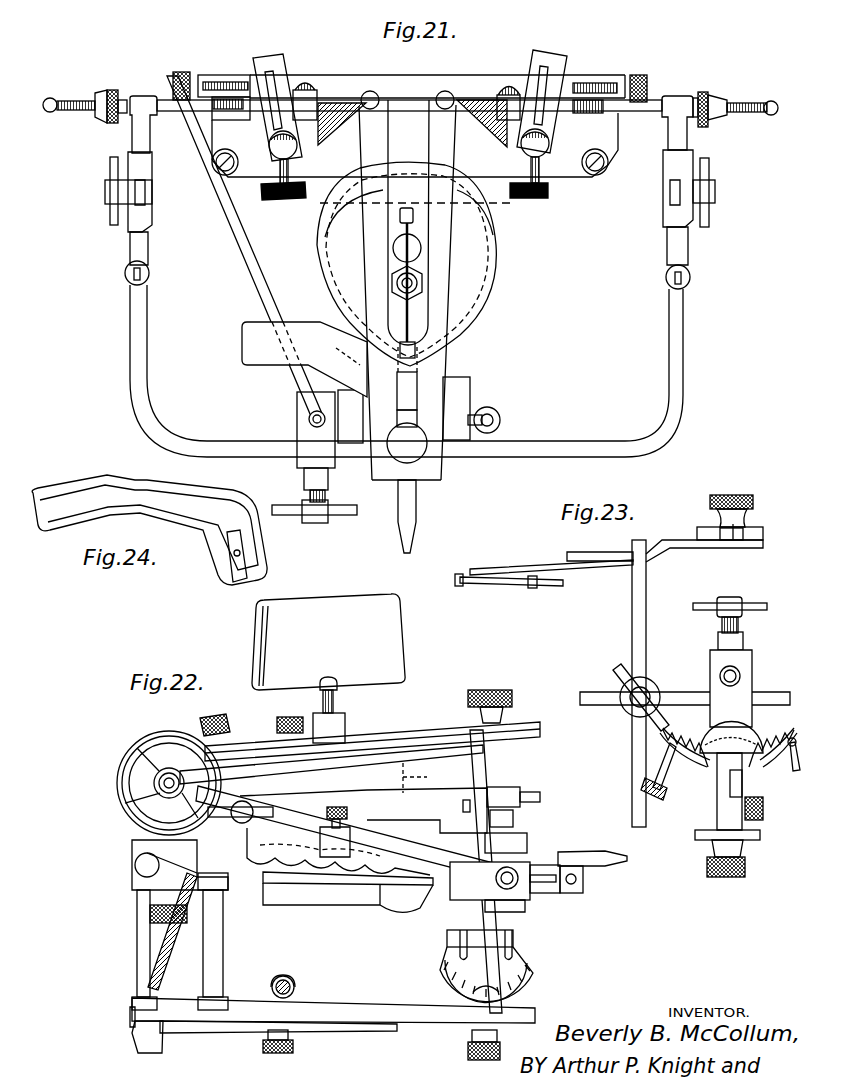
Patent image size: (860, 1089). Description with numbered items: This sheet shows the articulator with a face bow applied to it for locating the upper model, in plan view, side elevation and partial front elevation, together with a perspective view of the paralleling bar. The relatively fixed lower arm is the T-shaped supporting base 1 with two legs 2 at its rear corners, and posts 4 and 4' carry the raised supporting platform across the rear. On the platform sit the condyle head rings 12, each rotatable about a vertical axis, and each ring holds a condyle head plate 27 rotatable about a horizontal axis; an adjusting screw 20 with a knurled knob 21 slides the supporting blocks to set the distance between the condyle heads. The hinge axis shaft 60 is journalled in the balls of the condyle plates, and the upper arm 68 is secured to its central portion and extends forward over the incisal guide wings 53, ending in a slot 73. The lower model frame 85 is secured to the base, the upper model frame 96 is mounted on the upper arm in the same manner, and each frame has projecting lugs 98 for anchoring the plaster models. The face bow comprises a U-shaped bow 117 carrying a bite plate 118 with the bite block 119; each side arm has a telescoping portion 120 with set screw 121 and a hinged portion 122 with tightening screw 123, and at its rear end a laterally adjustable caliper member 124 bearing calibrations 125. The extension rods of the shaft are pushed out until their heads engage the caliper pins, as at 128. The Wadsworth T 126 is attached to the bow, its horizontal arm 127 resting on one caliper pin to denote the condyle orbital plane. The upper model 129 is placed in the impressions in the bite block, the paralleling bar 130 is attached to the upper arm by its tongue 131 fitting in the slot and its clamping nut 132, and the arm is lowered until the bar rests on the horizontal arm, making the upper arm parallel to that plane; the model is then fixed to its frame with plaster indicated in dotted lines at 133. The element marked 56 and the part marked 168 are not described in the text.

In FIG. 23, the supporting base 1 is at (705, 835).
In FIG. 22, the supporting base 1 is at (433, 1020).
In FIG. 22, the legs 2 is at (143, 1040).
In FIG. 22, the post 4 is at (197, 941).
In FIG. 22, the post 4' is at (140, 950).
In FIG. 21, the condyle head ring 12 is at (547, 66).
In FIG. 22, the condyle head ring 12 is at (118, 771).
In FIG. 21, the adjusting screw 20 is at (595, 83).
In FIG. 21, the knurled knob 21 is at (650, 86).
In FIG. 22, the condyle head plate 27 is at (140, 790).
In FIG. 23, the guide wings 53 is at (700, 743).
In FIG. 22, the guide wings 53 is at (443, 941).
In FIG. 23, the dome head 56 is at (745, 745).
In FIG. 21, the hinge axis shaft 60 is at (328, 103).
In FIG. 21, the upper arm 68 is at (440, 364).
In FIG. 22, the upper arm 68 is at (412, 742).
In FIG. 23, the slot 73 is at (560, 520).
In FIG. 22, the lower model frame 85 is at (323, 1002).
In FIG. 21, the upper model frame 96 is at (483, 291).
In FIG. 22, the projecting lugs 98 is at (281, 979).
In FIG. 21, the U-shaped bow 117 is at (550, 443).
In FIG. 23, the U-shaped bow 117 is at (603, 696).
In FIG. 22, the U-shaped bow 117 is at (420, 857).
In FIG. 21, the bite plate 118 is at (467, 330).
In FIG. 22, the bite plate 118 is at (430, 890).
In FIG. 21, the bite block 119 is at (498, 204).
In FIG. 22, the bite block 119 is at (357, 888).
In FIG. 21, the telescoping portion 120 is at (137, 248).
In FIG. 22, the telescoping portion 120 is at (300, 830).
In FIG. 21, the set screw 121 is at (149, 272).
In FIG. 22, the set screw 121 is at (407, 813).
In FIG. 21, the hinged portion 122 is at (140, 153).
In FIG. 22, the hinged portion 122 is at (133, 822).
In FIG. 21, the tightening screw 123 is at (115, 194).
In FIG. 22, the tightening screw 123 is at (243, 823).
In FIG. 21, the caliper member 124 is at (93, 113).
In FIG. 23, the caliper member 124 is at (487, 584).
In FIG. 22, the caliper member 124 is at (170, 775).
In FIG. 21, the calibrations 125 is at (70, 112).
In FIG. 21, the Wadsworth T 126 is at (308, 420).
In FIG. 23, the Wadsworth T 126 is at (639, 578).
In FIG. 22, the Wadsworth T 126 is at (480, 783).
In FIG. 21, the horizontal arm 127 is at (248, 270).
In FIG. 23, the horizontal arm 127 is at (507, 553).
In FIG. 22, the horizontal arm 127 is at (343, 760).
In FIG. 21, the engagement of extension rod heads with caliper pins 128 is at (612, 127).
In FIG. 23, the engagement of extension rod heads with caliper pins 128 is at (528, 590).
In FIG. 22, the upper model 129 is at (343, 862).
In FIG. 21, the paralleling bar 130 is at (356, 390).
In FIG. 24, the paralleling bar 130 is at (185, 507).
In FIG. 23, the paralleling bar 130 is at (693, 545).
In FIG. 21, the tongue 131 is at (433, 482).
In FIG. 24, the tongue 131 is at (234, 544).
In FIG. 23, the tongue 131 is at (733, 537).
In FIG. 21, the clamping nut 132 is at (413, 443).
In FIG. 23, the clamping nut 132 is at (725, 495).
In FIG. 22, the clamping nut 132 is at (502, 689).
In FIG. 22, the plaster 133 is at (403, 777).
In FIG. 23, the block 168 is at (752, 530).